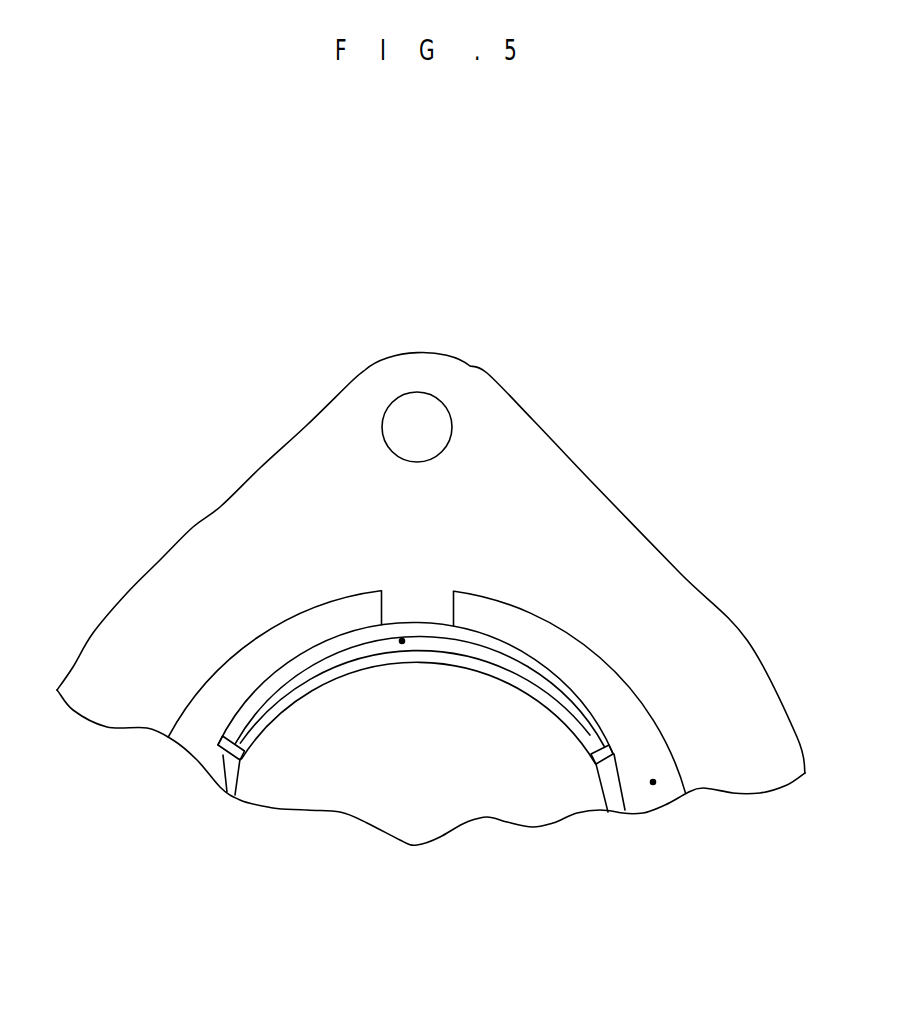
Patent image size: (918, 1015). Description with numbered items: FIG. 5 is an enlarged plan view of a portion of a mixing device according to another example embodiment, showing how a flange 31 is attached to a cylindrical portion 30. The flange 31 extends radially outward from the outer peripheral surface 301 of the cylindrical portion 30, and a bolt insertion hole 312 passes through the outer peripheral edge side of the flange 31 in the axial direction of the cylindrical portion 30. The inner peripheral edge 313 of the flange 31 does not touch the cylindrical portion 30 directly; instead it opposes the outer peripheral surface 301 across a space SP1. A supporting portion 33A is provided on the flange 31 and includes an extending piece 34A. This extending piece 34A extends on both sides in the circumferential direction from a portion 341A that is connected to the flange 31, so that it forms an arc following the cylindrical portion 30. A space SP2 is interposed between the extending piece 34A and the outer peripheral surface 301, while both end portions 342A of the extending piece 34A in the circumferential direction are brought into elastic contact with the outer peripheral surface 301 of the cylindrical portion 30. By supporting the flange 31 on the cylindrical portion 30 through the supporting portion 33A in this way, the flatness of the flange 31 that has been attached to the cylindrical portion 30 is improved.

The cylindrical portion 30 is at (224, 788).
The outer peripheral surface 301 is at (222, 770).
The flange 31 is at (598, 500).
The bolt insertion hole 312 is at (388, 436).
The inner peripheral edge 313 is at (632, 694).
The supporting portion 33A is at (377, 666).
The extending piece 34A is at (580, 591).
The portion connected to the flange 341A is at (417, 622).
The end portion 342A is at (232, 750).
The space SP1 is at (655, 781).
The space SP2 is at (402, 645).